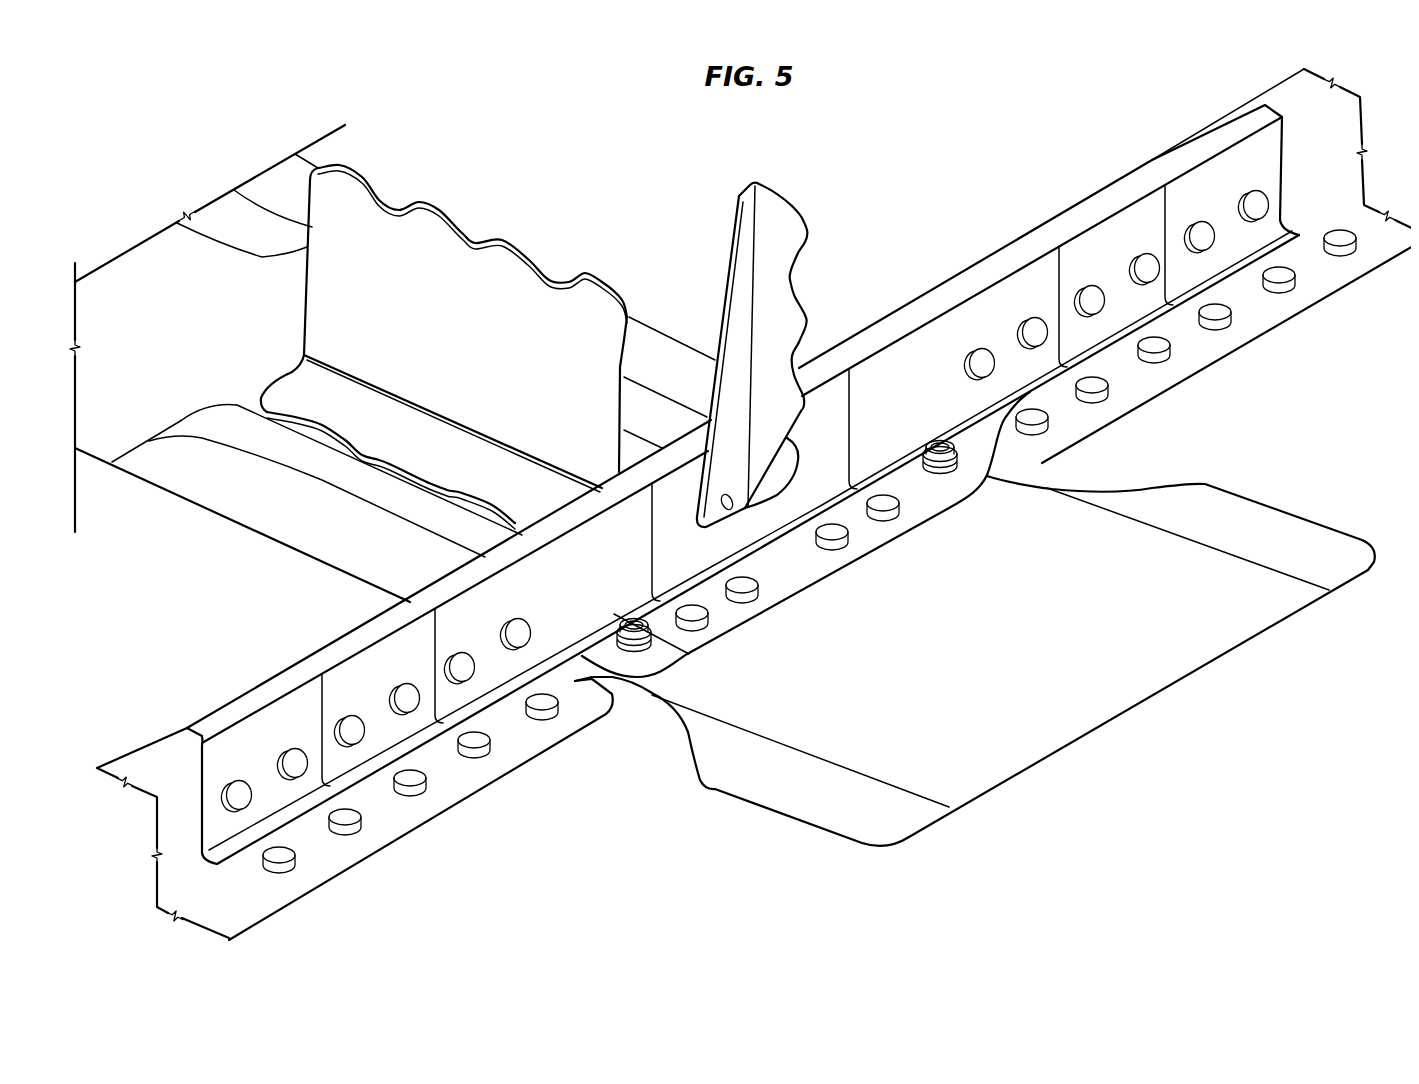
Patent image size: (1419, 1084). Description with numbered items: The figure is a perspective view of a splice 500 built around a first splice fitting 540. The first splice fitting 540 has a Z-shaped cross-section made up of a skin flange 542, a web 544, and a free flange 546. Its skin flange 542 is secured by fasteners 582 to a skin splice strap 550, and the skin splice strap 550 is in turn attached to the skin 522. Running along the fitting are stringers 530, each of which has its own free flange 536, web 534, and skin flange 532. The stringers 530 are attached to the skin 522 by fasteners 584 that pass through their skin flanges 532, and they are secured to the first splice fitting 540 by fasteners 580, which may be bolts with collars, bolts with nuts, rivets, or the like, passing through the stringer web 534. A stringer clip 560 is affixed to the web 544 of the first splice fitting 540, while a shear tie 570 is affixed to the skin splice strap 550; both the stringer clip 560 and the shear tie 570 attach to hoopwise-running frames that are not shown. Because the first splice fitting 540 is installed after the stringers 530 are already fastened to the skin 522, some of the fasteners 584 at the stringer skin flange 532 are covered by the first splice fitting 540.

The splice 500 is at (787, 522).
The skin 522 is at (1252, 418).
The stringers 530 is at (437, 680).
The skin flange 532 is at (386, 825).
The web 534 is at (188, 800).
The free flange 536 is at (170, 747).
The first splice fitting 540 is at (996, 391).
The skin flange 542 is at (918, 497).
The web 544 is at (927, 377).
The free flange 546 is at (1068, 214).
The skin splice strap 550 is at (1272, 503).
The stringer clip 560 is at (796, 200).
The shear tie 570 is at (515, 240).
The fasteners 580 is at (992, 352).
The fasteners 582 is at (956, 466).
The fasteners 584 is at (1046, 429).